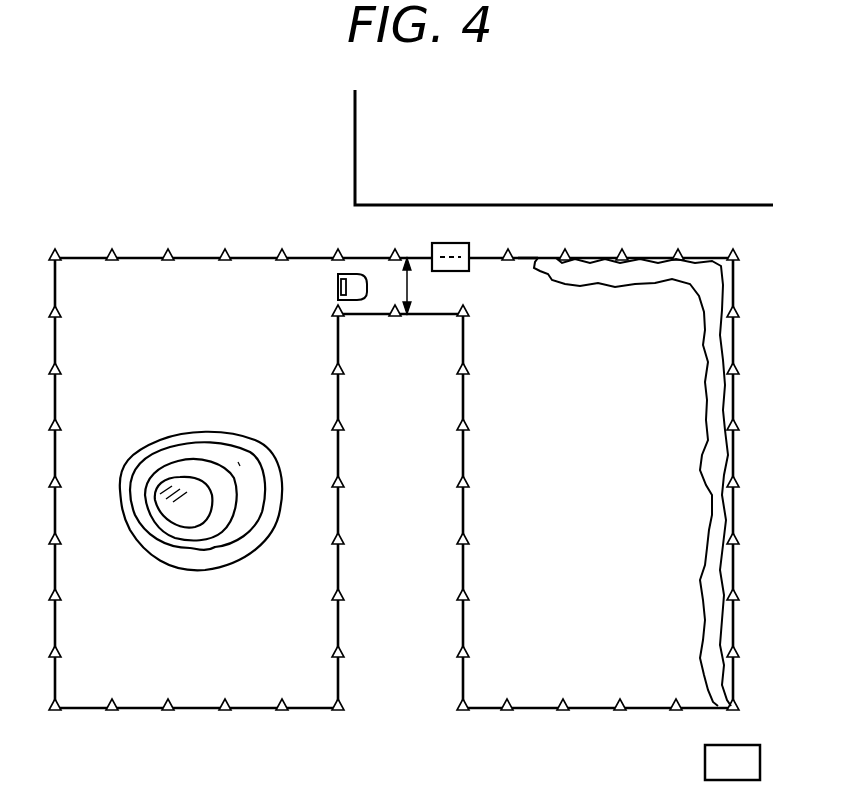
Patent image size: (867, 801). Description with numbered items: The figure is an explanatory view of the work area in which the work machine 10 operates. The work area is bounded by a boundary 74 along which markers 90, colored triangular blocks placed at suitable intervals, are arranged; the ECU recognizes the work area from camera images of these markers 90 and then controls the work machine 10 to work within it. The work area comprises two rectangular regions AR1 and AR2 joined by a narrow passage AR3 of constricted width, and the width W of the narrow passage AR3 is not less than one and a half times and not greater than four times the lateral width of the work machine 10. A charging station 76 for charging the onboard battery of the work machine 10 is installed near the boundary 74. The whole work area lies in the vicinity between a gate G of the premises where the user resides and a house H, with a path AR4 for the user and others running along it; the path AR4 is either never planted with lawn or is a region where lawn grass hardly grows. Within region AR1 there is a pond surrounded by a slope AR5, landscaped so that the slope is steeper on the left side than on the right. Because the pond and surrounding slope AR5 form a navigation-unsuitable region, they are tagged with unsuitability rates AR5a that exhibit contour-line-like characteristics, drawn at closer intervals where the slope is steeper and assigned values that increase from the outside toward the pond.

The markers 90 is at (110, 256).
The charging station 76 is at (458, 243).
The boundary 74 is at (525, 257).
The work machine 10 is at (336, 287).
The region AR1 is at (152, 485).
The region AR2 is at (563, 638).
The narrow passage AR3 is at (386, 286).
The path AR4 is at (708, 528).
The pond and surrounding slope AR5 is at (157, 429).
The unsuitability rates AR5a is at (238, 463).
The width of narrow passage W is at (421, 286).
The house H is at (564, 147).
The gate G is at (732, 762).